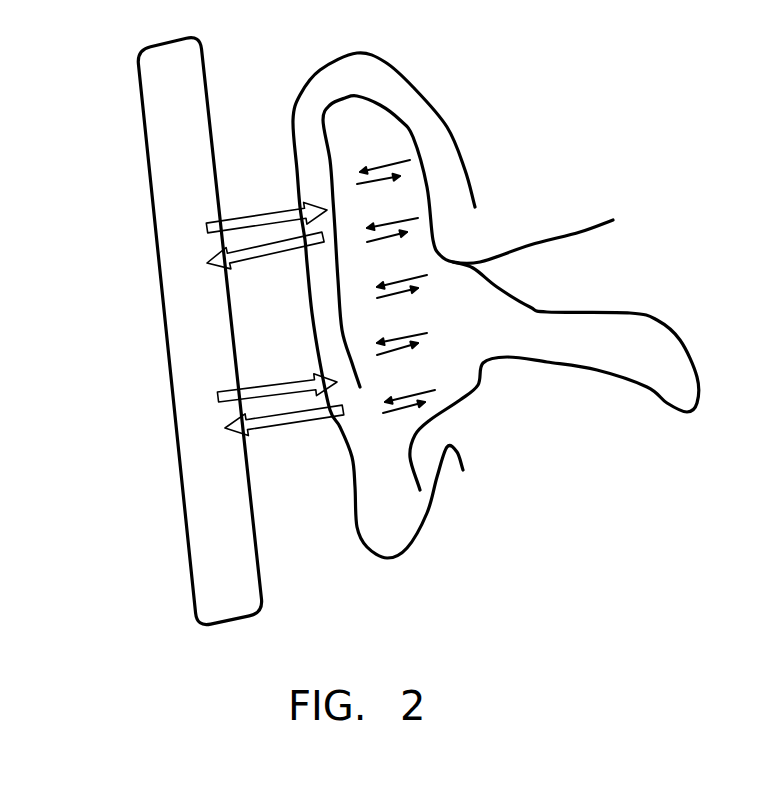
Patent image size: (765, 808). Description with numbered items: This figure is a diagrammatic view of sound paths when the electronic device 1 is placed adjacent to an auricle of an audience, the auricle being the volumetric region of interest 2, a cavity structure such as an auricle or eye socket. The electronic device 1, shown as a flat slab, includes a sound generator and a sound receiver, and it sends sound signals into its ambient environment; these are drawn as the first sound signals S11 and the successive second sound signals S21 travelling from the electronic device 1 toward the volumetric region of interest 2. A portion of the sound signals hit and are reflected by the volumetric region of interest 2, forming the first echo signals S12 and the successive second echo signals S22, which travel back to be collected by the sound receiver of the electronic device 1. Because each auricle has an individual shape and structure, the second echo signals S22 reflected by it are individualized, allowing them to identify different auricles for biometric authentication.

The electronic device 1 is at (147, 133).
The volumetric region of interest 2 is at (398, 73).
The first sound signals S11 is at (266, 202).
The first echo signals S12 is at (265, 274).
The second sound signals S21 is at (277, 366).
The second echo signals S22 is at (284, 446).